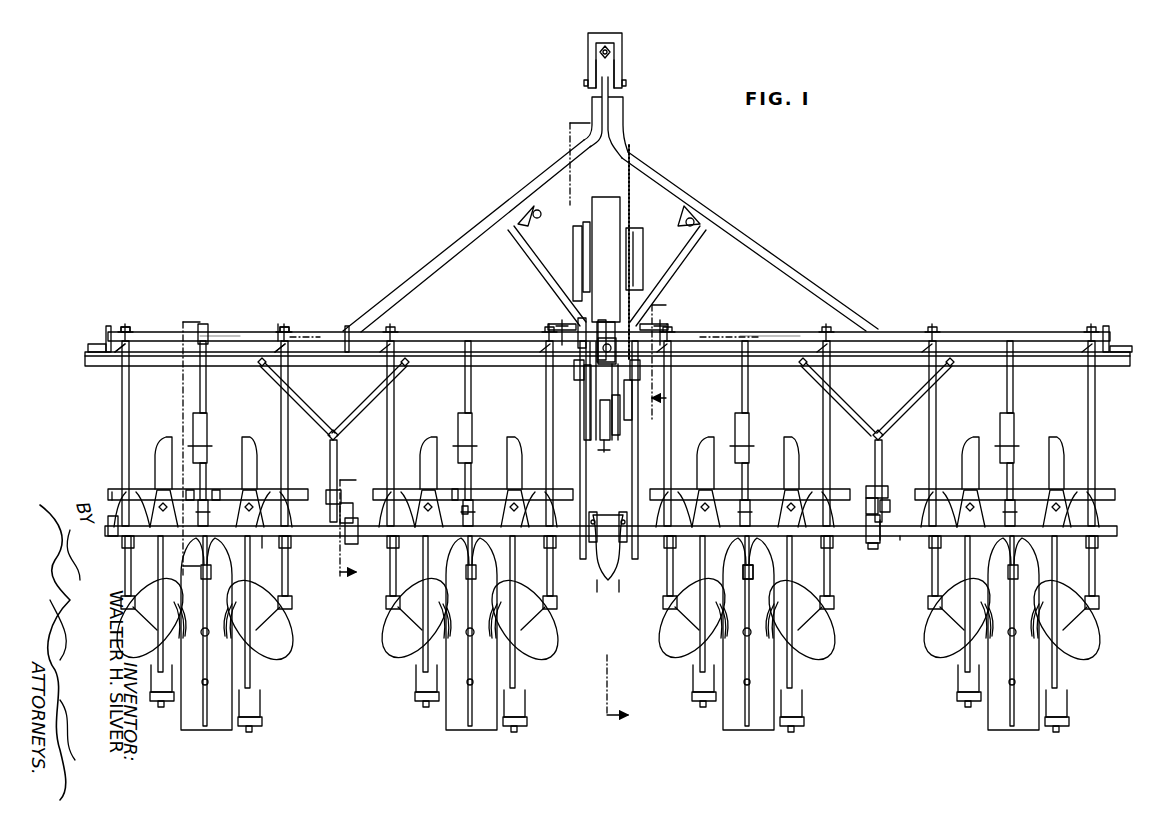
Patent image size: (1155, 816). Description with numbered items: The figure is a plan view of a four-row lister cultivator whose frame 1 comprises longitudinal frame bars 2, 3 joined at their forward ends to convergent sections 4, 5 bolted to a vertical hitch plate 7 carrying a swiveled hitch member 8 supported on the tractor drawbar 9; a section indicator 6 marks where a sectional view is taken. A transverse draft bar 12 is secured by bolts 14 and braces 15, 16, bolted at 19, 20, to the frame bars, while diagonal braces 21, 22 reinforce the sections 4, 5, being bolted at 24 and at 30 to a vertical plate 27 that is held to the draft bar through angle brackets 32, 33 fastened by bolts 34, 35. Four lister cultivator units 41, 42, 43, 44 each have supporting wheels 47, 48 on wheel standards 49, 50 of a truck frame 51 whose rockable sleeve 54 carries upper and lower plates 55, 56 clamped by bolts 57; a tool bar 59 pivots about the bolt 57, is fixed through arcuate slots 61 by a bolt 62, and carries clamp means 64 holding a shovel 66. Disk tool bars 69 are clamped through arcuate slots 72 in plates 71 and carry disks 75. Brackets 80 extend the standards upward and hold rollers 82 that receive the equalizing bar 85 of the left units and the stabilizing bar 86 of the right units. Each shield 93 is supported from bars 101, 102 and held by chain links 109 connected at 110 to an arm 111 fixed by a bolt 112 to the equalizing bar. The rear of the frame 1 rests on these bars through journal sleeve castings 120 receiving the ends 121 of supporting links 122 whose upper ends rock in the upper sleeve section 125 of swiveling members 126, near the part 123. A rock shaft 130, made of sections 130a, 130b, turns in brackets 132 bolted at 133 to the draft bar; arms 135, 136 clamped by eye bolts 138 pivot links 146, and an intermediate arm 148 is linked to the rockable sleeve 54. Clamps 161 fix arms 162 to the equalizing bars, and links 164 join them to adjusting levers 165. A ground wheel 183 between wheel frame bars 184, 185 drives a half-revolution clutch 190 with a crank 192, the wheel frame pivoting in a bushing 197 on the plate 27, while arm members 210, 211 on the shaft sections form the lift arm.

The frame 1 is at (392, 283).
The longitudinal frame bar 2 is at (337, 458).
The longitudinal frame bar 3 is at (894, 466).
The convergent frame bar section 4 is at (458, 252).
The convergent frame bar section 5 is at (758, 250).
The section line 6 is at (599, 410).
The vertical hitch plate 7 is at (612, 110).
The swiveled hitch member 8 is at (600, 70).
The drawbar 9 is at (588, 42).
The transverse draft bar 12 is at (302, 347).
The bolts 14 is at (342, 362).
The brace 15 is at (305, 408).
The brace 16 is at (376, 406).
The bolt 19 is at (258, 366).
The bolt 20 is at (329, 436).
The diagonal brace 21 is at (540, 262).
The diagonal brace 22 is at (672, 258).
The bolts 24 is at (528, 215).
The vertical plate 27 is at (604, 442).
The bolts 30 is at (622, 420).
The angle bracket 32 is at (584, 380).
The angle bracket 33 is at (632, 400).
The bolt 34 is at (574, 366).
The bolt 35 is at (640, 368).
The lister cultivator unit 41 is at (572, 554).
The lister cultivator unit 42 is at (482, 738).
The lister cultivator unit 43 is at (748, 738).
The lister cultivator unit 44 is at (1022, 736).
The supporting wheel 47 is at (160, 440).
The supporting wheel 48 is at (250, 440).
The wheel standard 49 is at (116, 496).
The wheel standard 50 is at (276, 498).
The truck frame 51 is at (206, 480).
The sleeve 54 is at (142, 496).
The upper plates 55 is at (156, 522).
The lower plates 56 is at (208, 514).
The bolts 57 is at (262, 496).
The tool bar 59 is at (160, 576).
The arcuate slot 61 is at (455, 494).
The bolt 62 is at (472, 510).
The clamp means 64 is at (162, 708).
The shovel 66 is at (155, 700).
The tool bar 69 is at (125, 560).
The plate 71 is at (110, 500).
The arcuate slot 72 is at (116, 527).
The disk 75 is at (166, 640).
The bracket 80 is at (268, 540).
The rollers 82 is at (290, 538).
The equalizing bar 85 is at (352, 544).
The stabilizing bar 86 is at (910, 540).
The shield 93 is at (218, 740).
The bar 101 is at (190, 492).
The bar 102 is at (216, 492).
The chain links 109 is at (220, 660).
The connection 110 is at (206, 684).
The arm 111 is at (207, 578).
The bolt 112 is at (746, 572).
The journal sleeve casting 120 is at (341, 490).
The lower end of supporting link 121 is at (890, 504).
The supporting link 122 is at (352, 504).
The bolt 123 is at (872, 549).
The upper sleeve section 125 is at (866, 538).
The swiveling member 126 is at (880, 540).
The rock shaft 130 is at (440, 330).
The rock shaft section 130a is at (240, 330).
The rock shaft section 130b is at (776, 331).
The brackets 132 is at (108, 328).
The bolts 133 is at (88, 348).
The arm 135 is at (282, 326).
The arm 136 is at (126, 323).
The bolts 138 is at (118, 352).
The links 146 is at (128, 400).
The arm 148 is at (206, 332).
The clamps 161 is at (608, 512).
The arm 162 is at (611, 583).
The link 164 is at (580, 470).
The adjusting lever 165 is at (556, 325).
The ground wheel 183 is at (607, 200).
The wheel frame bar 184 is at (574, 270).
The wheel frame bar 185 is at (643, 272).
The half-revolution clutch 190 is at (638, 214).
The crank 192 is at (585, 240).
The bushing 197 is at (615, 445).
The arm member 210 is at (578, 322).
The arm member 211 is at (603, 322).